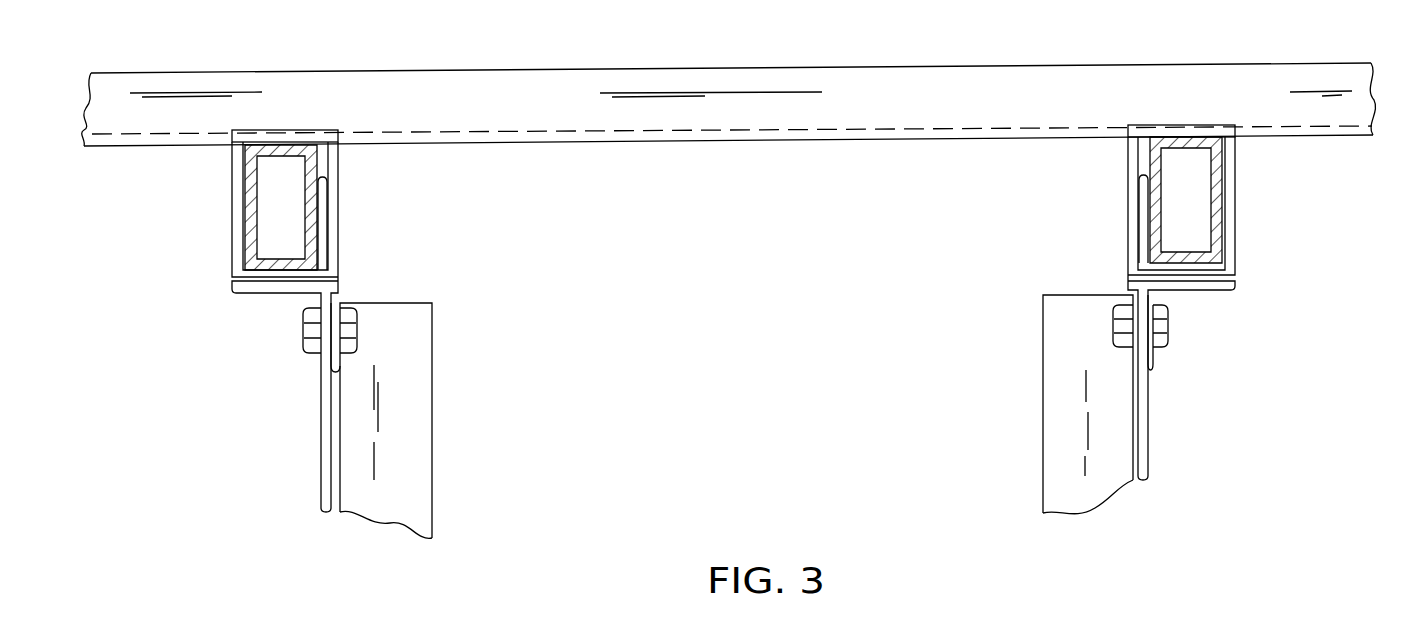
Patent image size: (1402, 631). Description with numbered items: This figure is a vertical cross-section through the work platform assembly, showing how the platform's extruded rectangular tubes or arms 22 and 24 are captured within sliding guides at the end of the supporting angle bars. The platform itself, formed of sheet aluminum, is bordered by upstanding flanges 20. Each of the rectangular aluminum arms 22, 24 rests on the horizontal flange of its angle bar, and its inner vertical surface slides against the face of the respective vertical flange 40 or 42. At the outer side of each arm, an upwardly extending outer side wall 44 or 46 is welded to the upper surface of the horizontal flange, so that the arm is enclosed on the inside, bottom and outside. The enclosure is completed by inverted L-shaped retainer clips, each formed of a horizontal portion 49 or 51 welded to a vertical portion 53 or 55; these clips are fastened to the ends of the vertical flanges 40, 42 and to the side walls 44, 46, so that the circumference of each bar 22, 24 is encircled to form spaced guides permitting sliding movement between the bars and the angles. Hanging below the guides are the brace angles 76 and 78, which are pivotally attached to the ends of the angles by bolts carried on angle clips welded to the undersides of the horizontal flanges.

The upstanding flanges 20 is at (806, 88).
The rectangular tube or arm 22 is at (252, 213).
The rectangular tube or arm 24 is at (1215, 240).
The vertical flange 40 is at (327, 244).
The vertical flange 42 is at (1145, 215).
The outer side wall 44 is at (232, 183).
The outer side wall 46 is at (1236, 155).
The horizontal portion 49 is at (300, 133).
The horizontal portion 51 is at (1196, 124).
The vertical portion 53 is at (341, 205).
The vertical portion 55 is at (1237, 193).
The brace angle 76 is at (413, 400).
The brace angle 78 is at (1058, 372).